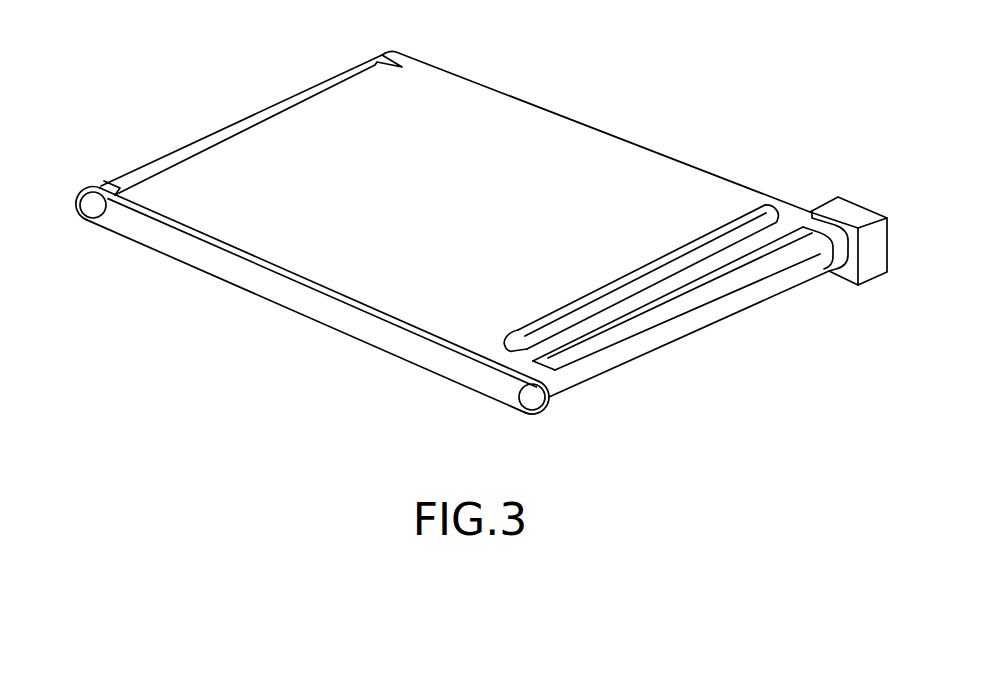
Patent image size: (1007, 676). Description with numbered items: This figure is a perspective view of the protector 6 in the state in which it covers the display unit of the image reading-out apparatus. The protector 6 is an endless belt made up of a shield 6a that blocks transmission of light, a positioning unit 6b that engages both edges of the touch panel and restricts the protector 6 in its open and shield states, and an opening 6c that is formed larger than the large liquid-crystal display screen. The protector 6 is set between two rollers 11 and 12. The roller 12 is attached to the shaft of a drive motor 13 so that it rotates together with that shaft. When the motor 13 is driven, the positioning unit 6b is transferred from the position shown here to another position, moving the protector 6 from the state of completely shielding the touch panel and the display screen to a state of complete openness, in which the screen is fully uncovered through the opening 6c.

The protector 6 is at (457, 220).
The shield 6a is at (490, 127).
The positioning unit 6b is at (735, 226).
The opening 6c is at (789, 240).
The roller 11 is at (90, 208).
The roller 12 is at (532, 398).
The drive motor 13 is at (853, 213).